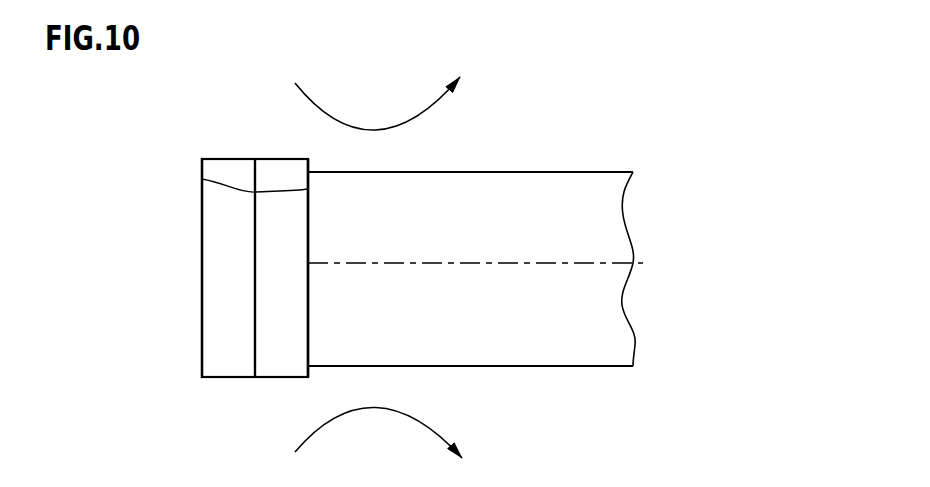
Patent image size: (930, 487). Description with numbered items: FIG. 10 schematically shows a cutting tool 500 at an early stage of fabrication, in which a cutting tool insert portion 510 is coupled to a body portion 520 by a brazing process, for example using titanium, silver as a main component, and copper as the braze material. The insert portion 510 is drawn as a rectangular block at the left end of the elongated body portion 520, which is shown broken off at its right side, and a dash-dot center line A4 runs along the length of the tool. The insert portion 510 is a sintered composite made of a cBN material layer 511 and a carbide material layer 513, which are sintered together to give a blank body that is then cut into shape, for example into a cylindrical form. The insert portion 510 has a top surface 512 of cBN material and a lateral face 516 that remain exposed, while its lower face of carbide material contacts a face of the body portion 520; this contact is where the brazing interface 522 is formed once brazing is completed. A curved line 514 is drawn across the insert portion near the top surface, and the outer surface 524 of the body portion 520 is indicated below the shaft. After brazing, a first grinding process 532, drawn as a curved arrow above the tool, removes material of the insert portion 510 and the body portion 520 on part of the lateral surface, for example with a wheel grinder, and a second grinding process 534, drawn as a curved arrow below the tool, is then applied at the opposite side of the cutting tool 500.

The cutting tool 500 is at (660, 113).
The cutting tool insert portion 510 is at (178, 286).
The cBN material layer 511 is at (248, 296).
The top surface 512 is at (202, 210).
The carbide material layer 513 is at (300, 296).
The curved contact line 514 is at (202, 179).
The lateral face 516 is at (235, 158).
The body portion 520 is at (512, 227).
The brazing interface 522 is at (308, 300).
The shaft outer surface 524 is at (582, 368).
The first grinding process 532 is at (373, 130).
The second grinding process 534 is at (373, 406).
The rotation axis A4 is at (548, 263).